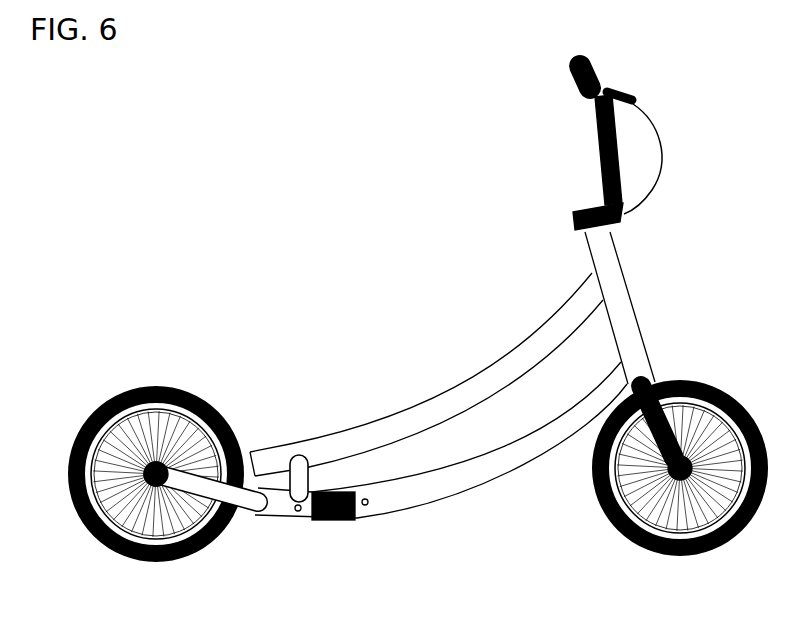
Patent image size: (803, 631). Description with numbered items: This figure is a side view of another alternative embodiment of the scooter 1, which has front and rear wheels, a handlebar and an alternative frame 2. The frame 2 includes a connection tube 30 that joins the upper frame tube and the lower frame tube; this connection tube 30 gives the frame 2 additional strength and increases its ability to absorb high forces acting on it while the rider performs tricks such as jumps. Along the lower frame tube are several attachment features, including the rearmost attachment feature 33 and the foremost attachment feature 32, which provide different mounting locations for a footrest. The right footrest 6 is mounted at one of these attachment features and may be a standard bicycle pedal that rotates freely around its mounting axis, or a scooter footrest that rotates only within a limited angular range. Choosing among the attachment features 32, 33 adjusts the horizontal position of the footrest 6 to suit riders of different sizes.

The stepper scooter 1 is at (418, 329).
The frame 2 is at (375, 416).
The right footrest 6 is at (343, 520).
The connection tube 30 is at (290, 455).
The attachment feature 32 is at (368, 502).
The attachment feature 33 is at (297, 511).